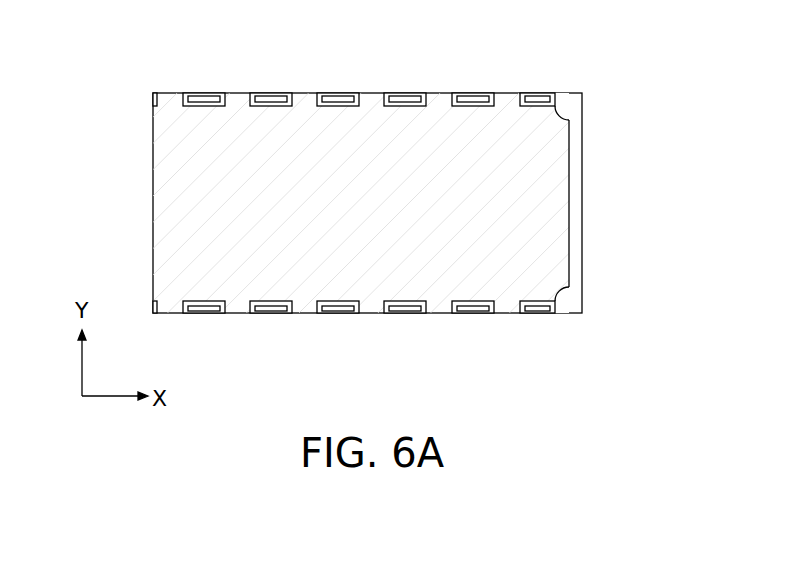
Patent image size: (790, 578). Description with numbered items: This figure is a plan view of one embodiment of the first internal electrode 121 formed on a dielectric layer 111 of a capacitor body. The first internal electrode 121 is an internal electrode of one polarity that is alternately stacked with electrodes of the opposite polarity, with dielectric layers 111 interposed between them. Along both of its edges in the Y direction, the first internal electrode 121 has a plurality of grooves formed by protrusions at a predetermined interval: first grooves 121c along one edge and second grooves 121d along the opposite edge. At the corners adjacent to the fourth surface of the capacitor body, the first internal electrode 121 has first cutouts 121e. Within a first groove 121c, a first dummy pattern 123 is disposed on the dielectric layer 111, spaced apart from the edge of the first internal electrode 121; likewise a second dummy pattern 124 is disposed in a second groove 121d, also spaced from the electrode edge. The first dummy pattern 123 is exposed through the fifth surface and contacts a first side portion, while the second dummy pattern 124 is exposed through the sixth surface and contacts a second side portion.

The dielectric layer 111 is at (582, 193).
The first internal electrode 121 is at (160, 200).
The first groove 121c is at (273, 313).
The second groove 121d is at (203, 93).
The first cutout 121e is at (562, 291).
The first dummy pattern 123 is at (474, 313).
The second dummy pattern 124 is at (474, 93).